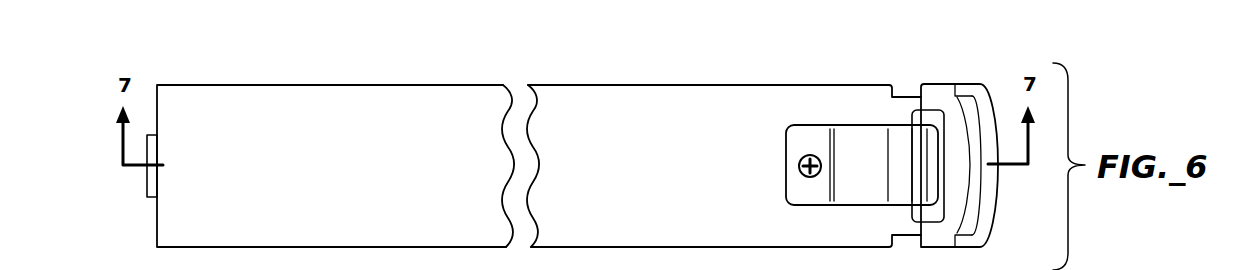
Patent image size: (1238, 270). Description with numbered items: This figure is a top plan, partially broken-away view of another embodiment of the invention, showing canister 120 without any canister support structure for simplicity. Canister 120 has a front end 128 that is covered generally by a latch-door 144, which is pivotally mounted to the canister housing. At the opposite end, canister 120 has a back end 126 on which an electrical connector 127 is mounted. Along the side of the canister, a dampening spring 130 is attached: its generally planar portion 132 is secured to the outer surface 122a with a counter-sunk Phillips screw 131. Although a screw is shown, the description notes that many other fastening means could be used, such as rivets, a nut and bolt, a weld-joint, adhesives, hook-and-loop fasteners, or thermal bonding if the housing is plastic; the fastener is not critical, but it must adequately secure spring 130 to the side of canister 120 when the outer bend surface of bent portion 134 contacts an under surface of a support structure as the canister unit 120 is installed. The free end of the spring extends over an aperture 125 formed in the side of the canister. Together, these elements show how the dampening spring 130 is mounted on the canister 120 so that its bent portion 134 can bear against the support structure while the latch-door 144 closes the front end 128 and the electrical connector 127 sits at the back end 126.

The canister 120 is at (748, 80).
The outer surface 122a is at (654, 136).
The aperture 125 is at (930, 112).
The back end 126 is at (150, 224).
The electrical connector 127 is at (147, 135).
The front end 128 is at (978, 207).
The dampening spring 130 is at (862, 110).
The counter-sunk Phillips screw 131 is at (799, 163).
The generally planar portion 132 is at (812, 216).
The bent portion 134 is at (868, 222).
The latch-door 144 is at (998, 183).